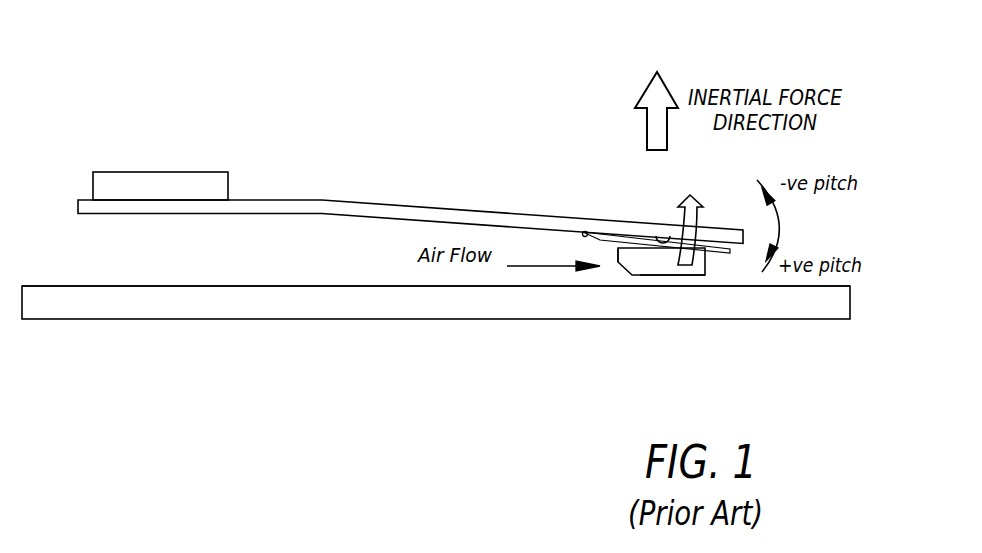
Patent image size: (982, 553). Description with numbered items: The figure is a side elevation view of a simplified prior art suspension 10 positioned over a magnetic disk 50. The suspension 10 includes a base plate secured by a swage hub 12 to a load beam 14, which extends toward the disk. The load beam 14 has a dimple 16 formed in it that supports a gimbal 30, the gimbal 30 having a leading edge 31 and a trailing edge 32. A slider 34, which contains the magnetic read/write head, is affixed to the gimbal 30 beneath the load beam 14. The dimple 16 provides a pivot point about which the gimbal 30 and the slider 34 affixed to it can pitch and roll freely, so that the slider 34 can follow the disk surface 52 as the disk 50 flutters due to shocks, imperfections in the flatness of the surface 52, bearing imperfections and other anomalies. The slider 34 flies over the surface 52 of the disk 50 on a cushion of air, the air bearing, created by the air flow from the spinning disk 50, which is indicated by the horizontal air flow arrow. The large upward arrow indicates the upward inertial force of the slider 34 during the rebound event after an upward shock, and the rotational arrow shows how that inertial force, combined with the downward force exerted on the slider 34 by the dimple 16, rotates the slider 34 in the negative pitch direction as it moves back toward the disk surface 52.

The suspension 10 is at (369, 103).
The swage hub 12 is at (152, 172).
The load beam 14 is at (377, 203).
The dimple 16 is at (663, 238).
The gimbal 30 is at (578, 246).
The leading edge 31 is at (615, 240).
The trailing edge 32 is at (720, 253).
The slider 34 is at (660, 265).
The magnetic disk 50 is at (335, 305).
The disk surface 52 is at (259, 287).